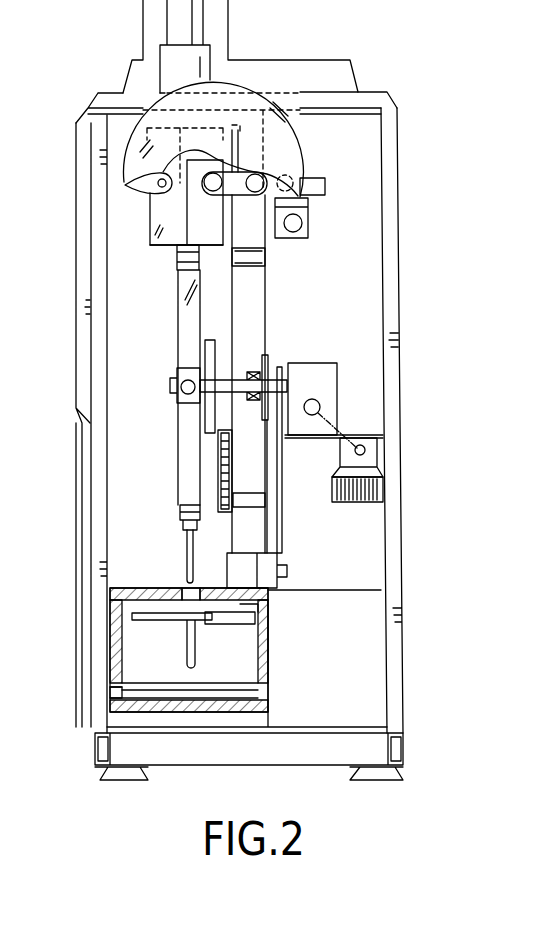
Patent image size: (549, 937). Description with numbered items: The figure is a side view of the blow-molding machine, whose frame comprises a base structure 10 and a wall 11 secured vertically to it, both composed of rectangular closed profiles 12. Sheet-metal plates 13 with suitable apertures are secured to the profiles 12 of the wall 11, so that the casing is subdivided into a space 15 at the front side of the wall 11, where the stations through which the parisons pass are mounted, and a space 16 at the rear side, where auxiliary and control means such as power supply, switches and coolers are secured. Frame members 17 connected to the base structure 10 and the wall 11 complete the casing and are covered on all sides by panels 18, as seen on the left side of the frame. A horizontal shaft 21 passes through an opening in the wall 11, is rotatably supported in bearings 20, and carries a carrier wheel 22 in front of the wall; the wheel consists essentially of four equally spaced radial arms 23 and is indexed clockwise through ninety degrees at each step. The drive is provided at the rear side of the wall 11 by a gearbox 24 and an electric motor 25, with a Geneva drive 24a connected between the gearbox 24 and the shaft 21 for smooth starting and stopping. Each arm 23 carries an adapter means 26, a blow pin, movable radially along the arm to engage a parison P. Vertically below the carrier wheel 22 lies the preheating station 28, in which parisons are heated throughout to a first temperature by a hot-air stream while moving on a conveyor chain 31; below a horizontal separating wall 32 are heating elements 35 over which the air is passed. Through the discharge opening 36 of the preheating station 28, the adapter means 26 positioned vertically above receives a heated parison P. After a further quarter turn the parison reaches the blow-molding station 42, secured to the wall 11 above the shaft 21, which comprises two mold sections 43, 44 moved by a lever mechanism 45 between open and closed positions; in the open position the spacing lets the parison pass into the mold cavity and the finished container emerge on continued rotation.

The base structure 10 is at (373, 754).
The wall 11 is at (270, 543).
The rectangular closed profiles 12 is at (266, 258).
The sheet-metal plates 13 is at (265, 320).
The space 15 is at (147, 329).
The space 16 is at (372, 284).
The frame members 17 is at (398, 185).
The panels 18 is at (80, 274).
The bearings 20 is at (262, 358).
The horizontal shaft 21 is at (243, 393).
The carrier wheel 22 is at (176, 400).
The radial arms 23 is at (178, 458).
The gearbox 24 is at (360, 445).
The Geneva drive 24a is at (317, 380).
The electric motor 25 is at (340, 490).
The adapter means 26 is at (181, 512).
The preheating station 28 is at (110, 607).
The conveyor chain 31 is at (142, 621).
The horizontal separating wall 32 is at (205, 685).
The heating elements 35 is at (110, 697).
The discharge opening 36 is at (205, 591).
The blow-molding station 42 is at (179, 214).
The mold section 43 is at (150, 215).
The mold section 44 is at (197, 222).
The lever mechanism 45 is at (295, 203).
The parison P is at (185, 556).